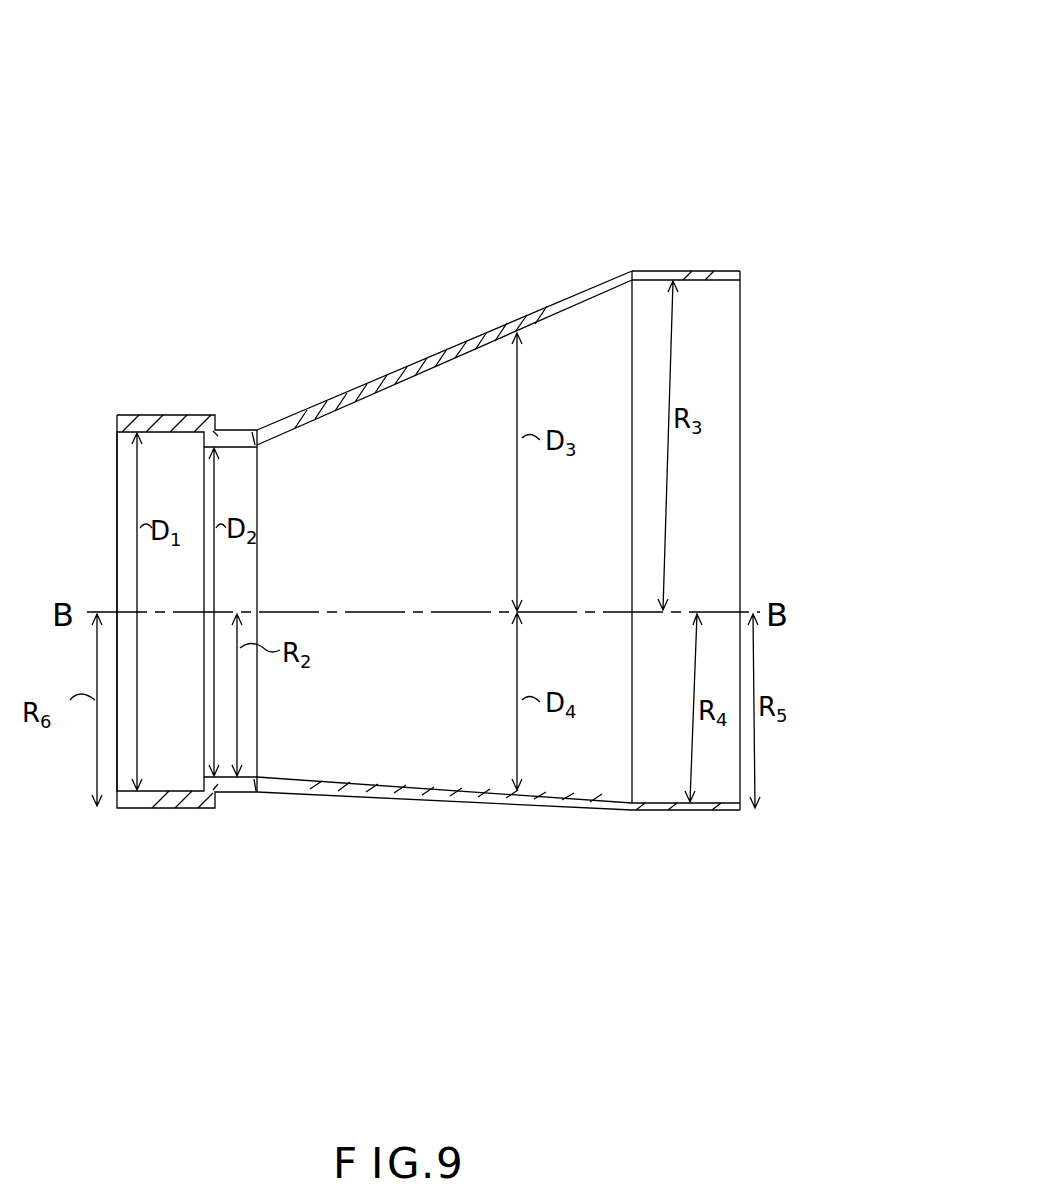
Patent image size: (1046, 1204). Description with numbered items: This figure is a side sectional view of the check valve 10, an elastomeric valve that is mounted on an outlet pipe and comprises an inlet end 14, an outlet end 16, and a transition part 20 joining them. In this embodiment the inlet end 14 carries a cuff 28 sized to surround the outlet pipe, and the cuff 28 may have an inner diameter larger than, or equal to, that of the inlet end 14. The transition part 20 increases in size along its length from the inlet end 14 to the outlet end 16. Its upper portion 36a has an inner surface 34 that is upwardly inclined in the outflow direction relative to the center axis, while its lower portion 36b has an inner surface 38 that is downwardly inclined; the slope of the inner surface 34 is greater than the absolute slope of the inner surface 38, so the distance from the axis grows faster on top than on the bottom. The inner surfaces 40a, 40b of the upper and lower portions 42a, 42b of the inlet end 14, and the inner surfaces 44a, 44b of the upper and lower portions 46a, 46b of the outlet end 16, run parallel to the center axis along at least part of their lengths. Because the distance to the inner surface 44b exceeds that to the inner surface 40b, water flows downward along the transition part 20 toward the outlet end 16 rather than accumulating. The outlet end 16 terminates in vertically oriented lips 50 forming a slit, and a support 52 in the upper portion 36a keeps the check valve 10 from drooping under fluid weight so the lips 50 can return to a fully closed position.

The check valve 10 is at (642, 78).
The inlet end 14 is at (255, 240).
The outlet end 16 is at (748, 212).
The transition part 20 is at (627, 227).
The cuff 28 is at (158, 424).
The inner surface of upper portion of transition part 34 is at (414, 378).
The upper portion of transition part 36a is at (492, 330).
The lower portion of transition part 36b is at (425, 795).
The inner surface of lower portion of transition part 38 is at (391, 785).
The inner surface of upper portion of inlet end 40a is at (244, 446).
The inner surface of lower portion of inlet end 40b is at (252, 777).
The upper portion of inlet end 42a is at (231, 445).
The lower portion of inlet end 42b is at (238, 785).
The inner surface of upper portion of outlet end 44a is at (735, 279).
The inner surface of lower portion of outlet end 44b is at (650, 802).
The upper portion of outlet end 46a is at (733, 270).
The lower portion of outlet end 46b is at (715, 810).
The lips 50 is at (734, 322).
The support 52 is at (345, 393).